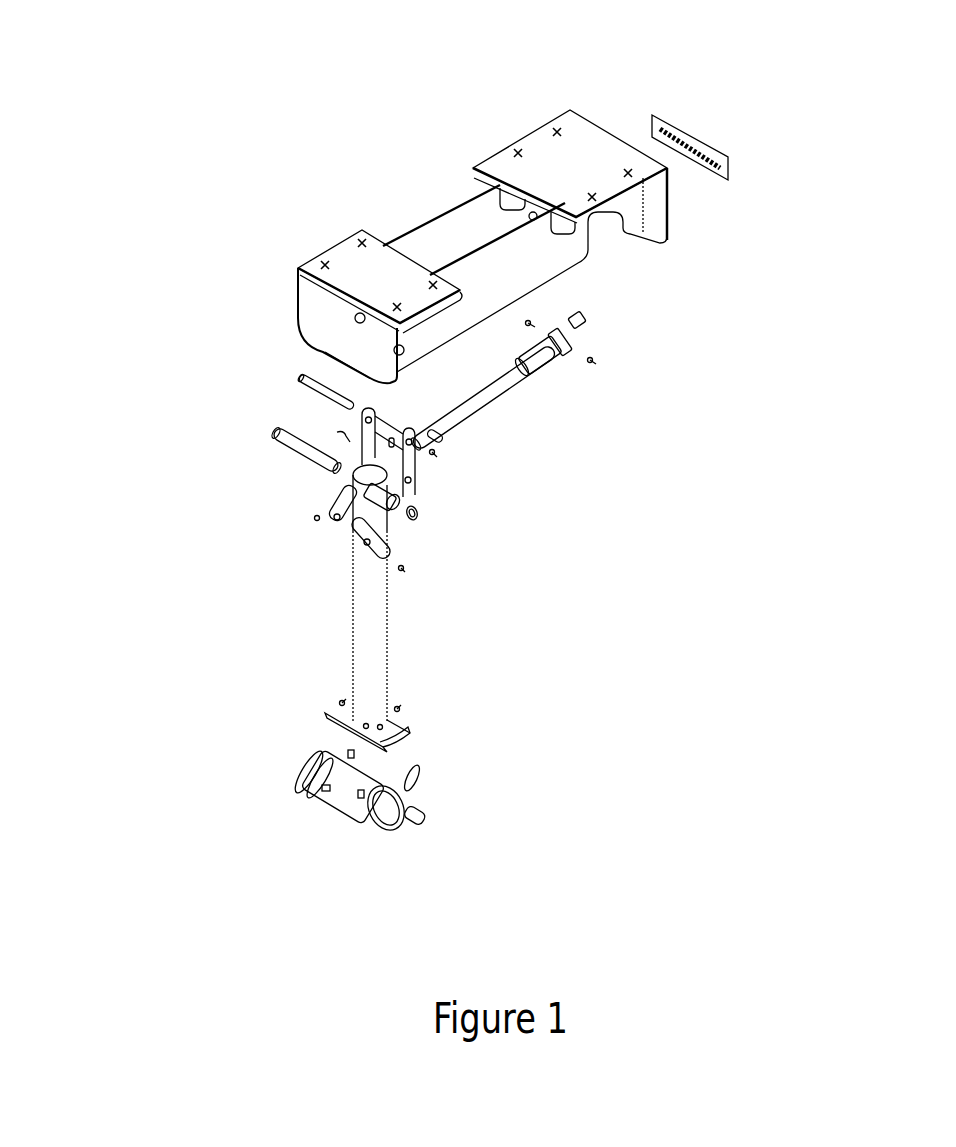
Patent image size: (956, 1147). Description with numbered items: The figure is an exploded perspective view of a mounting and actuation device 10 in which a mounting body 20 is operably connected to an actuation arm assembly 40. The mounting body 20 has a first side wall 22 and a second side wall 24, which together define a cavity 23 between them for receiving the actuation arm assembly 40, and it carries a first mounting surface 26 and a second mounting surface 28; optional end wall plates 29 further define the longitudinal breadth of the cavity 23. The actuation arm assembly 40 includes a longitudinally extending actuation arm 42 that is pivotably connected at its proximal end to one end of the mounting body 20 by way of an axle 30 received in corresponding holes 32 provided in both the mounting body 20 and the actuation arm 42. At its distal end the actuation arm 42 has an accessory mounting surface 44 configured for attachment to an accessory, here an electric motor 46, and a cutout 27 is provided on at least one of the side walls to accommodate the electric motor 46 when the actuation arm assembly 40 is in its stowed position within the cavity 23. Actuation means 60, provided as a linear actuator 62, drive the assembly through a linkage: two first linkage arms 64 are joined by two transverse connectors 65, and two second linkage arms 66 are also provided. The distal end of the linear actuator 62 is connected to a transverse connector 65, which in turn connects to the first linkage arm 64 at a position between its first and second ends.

The mounting and actuation device 10 is at (257, 98).
The mounting body 20 is at (711, 79).
The first side wall 22 is at (542, 258).
The cavity 23 is at (470, 214).
The second side wall 24 is at (442, 215).
The first mounting surface 26 is at (540, 136).
The cutout 27 is at (598, 235).
The second mounting surface 28 is at (343, 255).
The end wall plates 29 is at (668, 185).
The axle 30 is at (272, 430).
The holes 32 is at (387, 500).
The actuation arm assembly 40 is at (231, 655).
The actuation arm 42 is at (368, 654).
The accessory mounting surface 44 is at (385, 722).
The electric motor 46 is at (338, 783).
The actuation means 60 is at (703, 432).
The linear actuator 62 is at (507, 388).
The first linkage arms 64 is at (410, 492).
The transverse connectors 65 is at (405, 349).
The second linkage arms 66 is at (383, 545).